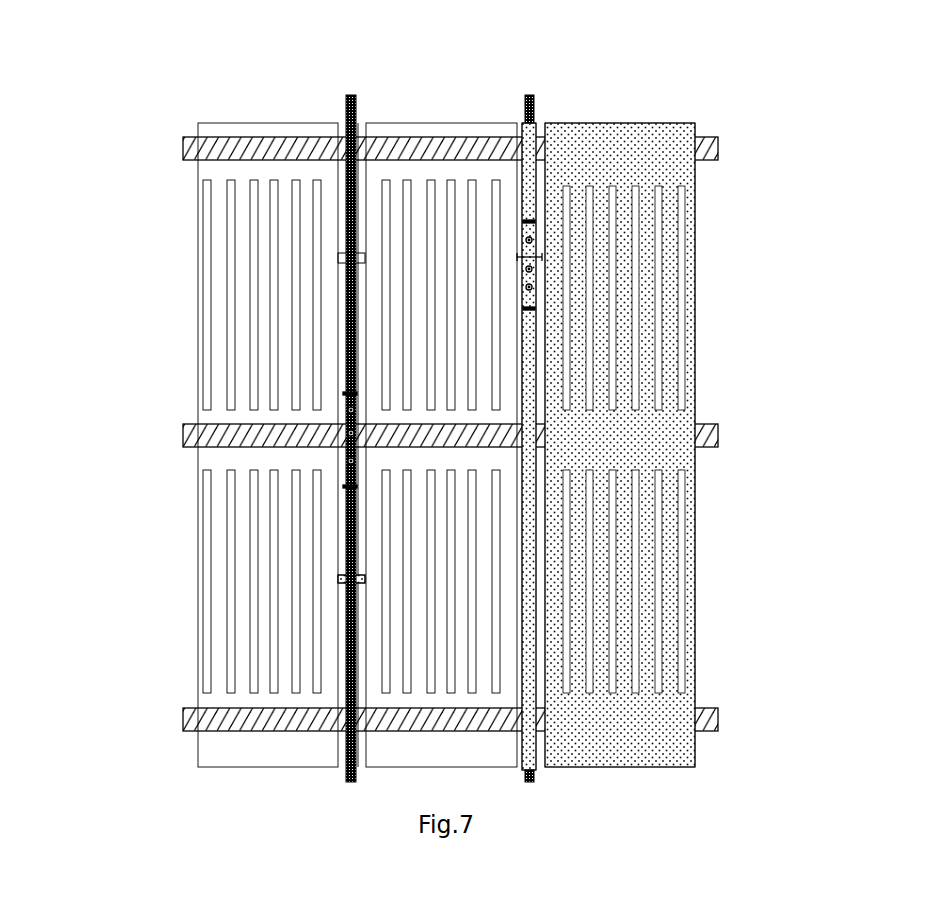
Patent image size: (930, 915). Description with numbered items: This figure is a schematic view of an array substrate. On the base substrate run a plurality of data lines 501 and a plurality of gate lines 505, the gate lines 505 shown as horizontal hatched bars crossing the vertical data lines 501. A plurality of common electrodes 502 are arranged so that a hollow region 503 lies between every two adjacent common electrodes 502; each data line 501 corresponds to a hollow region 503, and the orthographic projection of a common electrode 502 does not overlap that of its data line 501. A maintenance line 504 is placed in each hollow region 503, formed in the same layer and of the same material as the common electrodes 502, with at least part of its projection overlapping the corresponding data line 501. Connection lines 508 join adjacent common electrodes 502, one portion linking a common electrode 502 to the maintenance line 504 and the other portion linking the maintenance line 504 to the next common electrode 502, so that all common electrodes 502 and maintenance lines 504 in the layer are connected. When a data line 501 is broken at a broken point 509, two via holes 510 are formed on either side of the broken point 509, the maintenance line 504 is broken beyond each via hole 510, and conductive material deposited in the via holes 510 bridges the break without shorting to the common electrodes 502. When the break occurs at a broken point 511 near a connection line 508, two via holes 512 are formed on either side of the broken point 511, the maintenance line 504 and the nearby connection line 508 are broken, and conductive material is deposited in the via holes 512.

The data line 501 is at (535, 105).
The common electrode 502 is at (243, 130).
The hollow region 503 is at (362, 127).
The maintenance line 504 is at (345, 127).
The gate line 505 is at (182, 150).
The connection line 508 is at (338, 257).
The broken point 509 is at (348, 432).
The via hole 510 is at (348, 408).
The broken point 511 is at (540, 270).
The via hole 512 is at (537, 240).